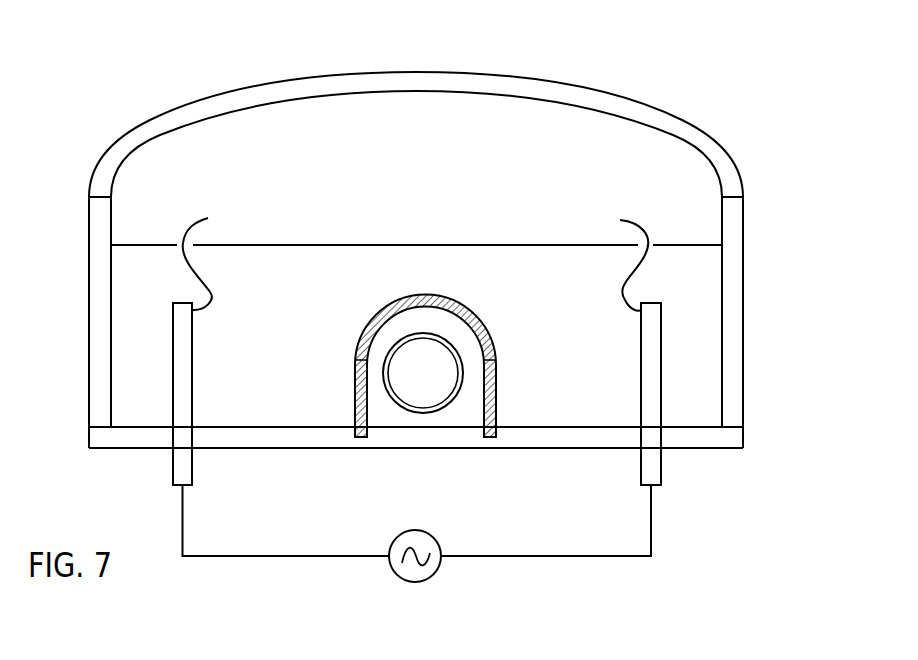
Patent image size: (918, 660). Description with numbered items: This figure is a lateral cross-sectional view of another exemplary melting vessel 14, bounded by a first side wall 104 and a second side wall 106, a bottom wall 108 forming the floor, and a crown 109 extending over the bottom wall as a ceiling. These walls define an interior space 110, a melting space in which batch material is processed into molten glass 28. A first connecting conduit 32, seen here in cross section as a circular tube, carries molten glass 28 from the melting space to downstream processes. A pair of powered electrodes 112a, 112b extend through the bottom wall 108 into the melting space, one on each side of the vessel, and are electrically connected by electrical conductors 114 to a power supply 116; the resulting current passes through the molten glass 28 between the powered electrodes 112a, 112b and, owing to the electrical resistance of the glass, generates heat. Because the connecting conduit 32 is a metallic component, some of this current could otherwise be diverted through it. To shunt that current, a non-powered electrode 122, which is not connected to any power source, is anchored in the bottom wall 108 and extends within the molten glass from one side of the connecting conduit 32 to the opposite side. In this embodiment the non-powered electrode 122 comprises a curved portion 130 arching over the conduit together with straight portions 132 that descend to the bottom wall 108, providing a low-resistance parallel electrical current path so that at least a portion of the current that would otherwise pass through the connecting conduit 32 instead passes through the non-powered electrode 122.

The melting vessel 14 is at (101, 132).
The molten glass 28 is at (262, 386).
The first connecting conduit 32 is at (440, 408).
The first side wall 104 is at (88, 227).
The second side wall 106 is at (745, 275).
The bottom wall 108 is at (545, 423).
The crown 109 is at (670, 118).
The interior space 110 is at (258, 260).
The powered electrode 112a is at (220, 343).
The powered electrode 112b is at (613, 343).
The electrical conductors 114 is at (652, 539).
The power supply 116 is at (407, 580).
The non-powered electrode 122 is at (361, 327).
The curved portion 130 is at (470, 318).
The straight portions 132 is at (354, 397).